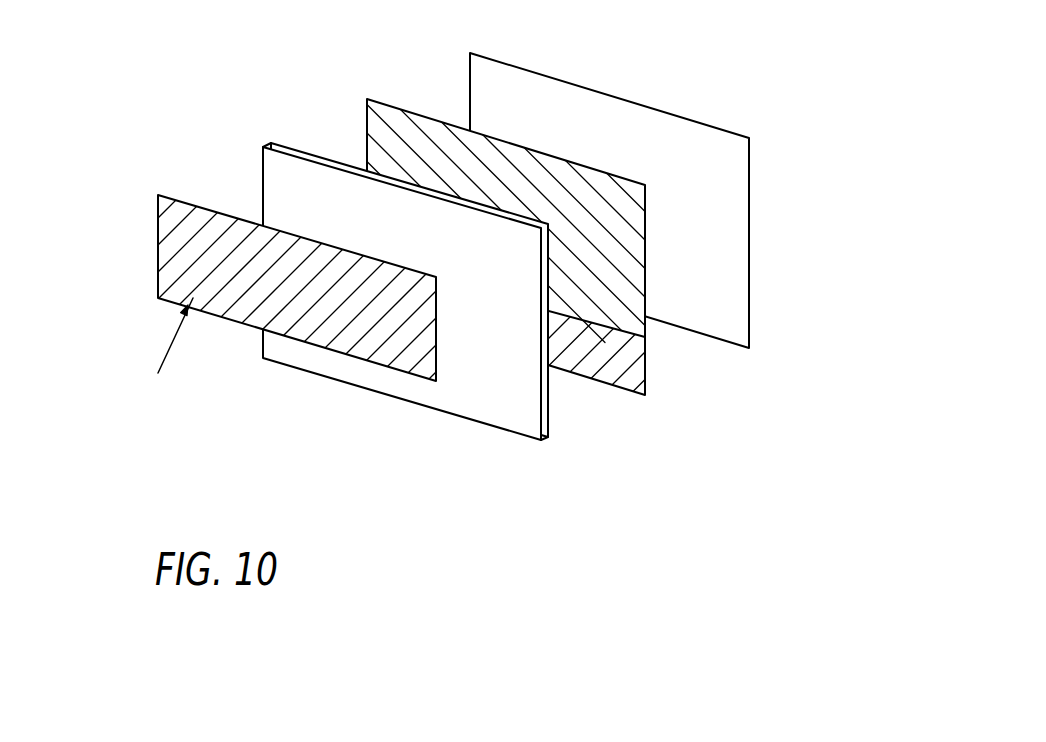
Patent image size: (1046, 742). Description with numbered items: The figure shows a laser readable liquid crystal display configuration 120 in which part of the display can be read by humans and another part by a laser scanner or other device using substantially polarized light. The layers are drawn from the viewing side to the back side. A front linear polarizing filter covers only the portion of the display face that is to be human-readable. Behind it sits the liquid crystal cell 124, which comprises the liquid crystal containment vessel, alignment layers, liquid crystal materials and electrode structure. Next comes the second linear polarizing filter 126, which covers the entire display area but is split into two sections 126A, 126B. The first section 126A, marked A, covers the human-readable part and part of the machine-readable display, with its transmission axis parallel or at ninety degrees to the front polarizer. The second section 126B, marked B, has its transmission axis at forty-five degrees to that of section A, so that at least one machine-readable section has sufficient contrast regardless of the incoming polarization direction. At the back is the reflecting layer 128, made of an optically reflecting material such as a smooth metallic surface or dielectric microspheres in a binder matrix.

The configuration 120 is at (148, 172).
The liquid crystal cell 124 is at (483, 423).
The second linear polarizing filter 126 is at (646, 400).
The first section of second linear polarizing filter 126A is at (623, 257).
The second section of second linear polarizing filter 126B is at (584, 366).
The reflecting layer 128 is at (755, 352).